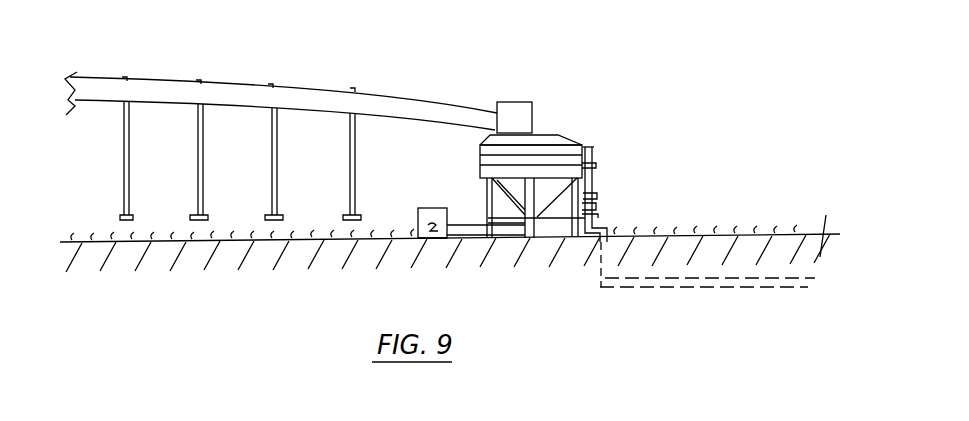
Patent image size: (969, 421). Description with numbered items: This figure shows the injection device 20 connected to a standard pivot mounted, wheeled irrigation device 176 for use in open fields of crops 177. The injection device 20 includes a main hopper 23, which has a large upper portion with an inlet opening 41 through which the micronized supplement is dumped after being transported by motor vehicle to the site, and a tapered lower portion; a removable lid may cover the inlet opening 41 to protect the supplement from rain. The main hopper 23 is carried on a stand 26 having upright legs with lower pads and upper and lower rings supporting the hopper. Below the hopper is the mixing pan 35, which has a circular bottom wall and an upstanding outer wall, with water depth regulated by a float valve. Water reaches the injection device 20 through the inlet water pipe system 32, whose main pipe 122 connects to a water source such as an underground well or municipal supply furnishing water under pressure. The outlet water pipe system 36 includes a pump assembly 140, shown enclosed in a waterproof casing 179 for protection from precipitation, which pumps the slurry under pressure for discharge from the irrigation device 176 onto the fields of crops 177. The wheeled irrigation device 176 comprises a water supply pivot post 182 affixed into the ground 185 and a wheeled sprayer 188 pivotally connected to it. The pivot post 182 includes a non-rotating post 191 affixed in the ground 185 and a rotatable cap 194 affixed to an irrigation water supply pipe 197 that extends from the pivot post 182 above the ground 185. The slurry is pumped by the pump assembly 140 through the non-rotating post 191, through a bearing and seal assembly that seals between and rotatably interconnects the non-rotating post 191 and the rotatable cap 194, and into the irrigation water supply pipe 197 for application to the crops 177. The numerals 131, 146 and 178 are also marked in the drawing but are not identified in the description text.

The wheeled irrigation device 176 is at (281, 119).
The wheeled sprayer 188 is at (253, 73).
The irrigation water supply pipe 197 is at (405, 100).
The water supply pivot post 182 is at (545, 98).
The rotatable cap 194 is at (533, 108).
The non-rotating post 191 is at (493, 137).
The inlet opening 41 is at (550, 137).
The injection device 20 is at (625, 120).
The inlet water pipe system 32 is at (603, 157).
The main hopper 23 is at (596, 166).
The mixing pan 35 is at (556, 213).
The main pipe 122 is at (597, 196).
The stand 26 is at (584, 206).
The elbow connection 131 is at (602, 219).
The ground surface 146 is at (468, 241).
The crops 177 is at (105, 232).
The ground 185 is at (837, 226).
The pump assembly 140 is at (425, 208).
The outlet water pipe system 36 is at (473, 219).
The waterproof casing 179 is at (418, 223).
The base 178 is at (437, 230).